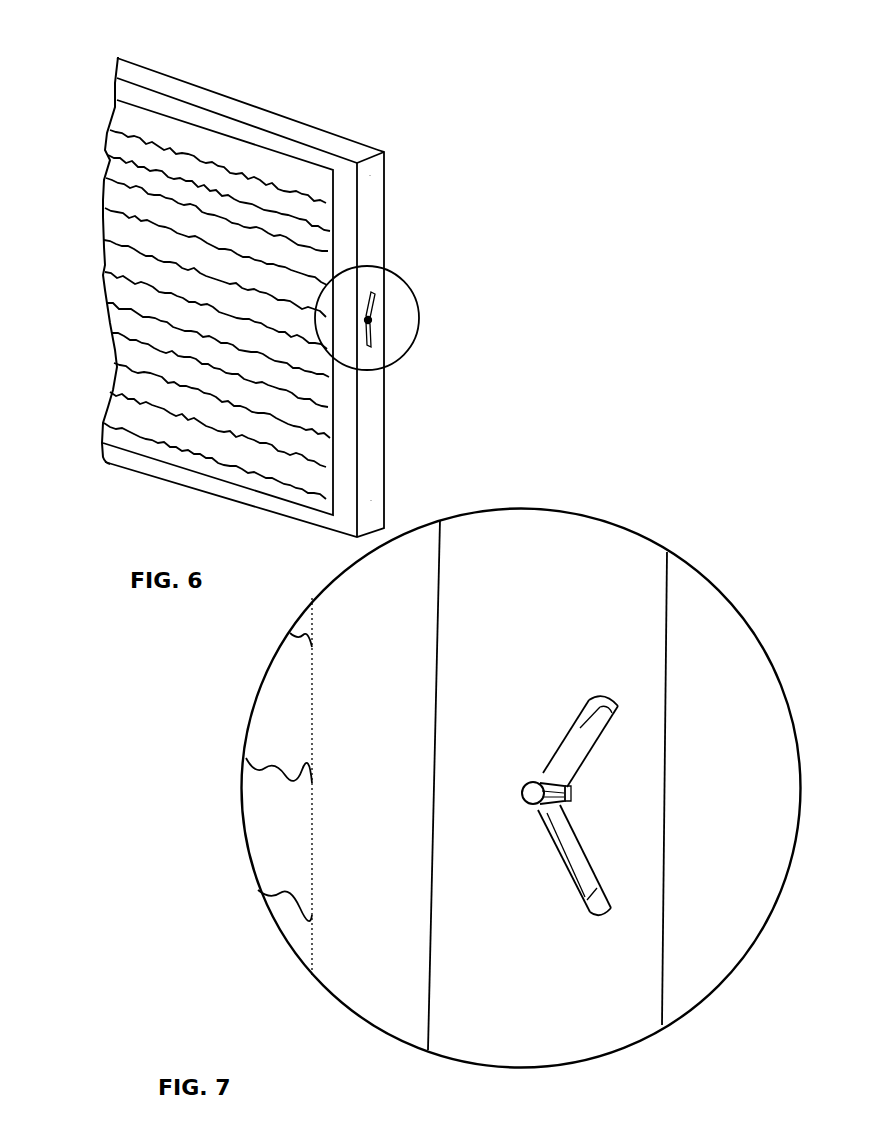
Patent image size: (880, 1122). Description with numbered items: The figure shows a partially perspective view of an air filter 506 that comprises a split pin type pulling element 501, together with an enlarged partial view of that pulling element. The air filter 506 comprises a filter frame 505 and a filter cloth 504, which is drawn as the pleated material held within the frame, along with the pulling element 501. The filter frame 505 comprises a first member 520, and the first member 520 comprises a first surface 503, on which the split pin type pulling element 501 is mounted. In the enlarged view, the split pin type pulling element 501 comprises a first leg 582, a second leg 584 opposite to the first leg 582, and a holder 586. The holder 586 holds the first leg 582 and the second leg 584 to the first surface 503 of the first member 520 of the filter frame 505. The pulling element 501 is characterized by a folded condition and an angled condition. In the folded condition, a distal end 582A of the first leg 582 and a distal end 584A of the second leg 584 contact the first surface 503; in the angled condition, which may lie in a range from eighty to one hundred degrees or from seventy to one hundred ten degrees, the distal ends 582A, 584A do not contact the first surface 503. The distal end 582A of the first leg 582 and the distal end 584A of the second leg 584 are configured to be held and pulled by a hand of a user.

In FIG. 6, the air filter 506 is at (228, 74).
In FIG. 6, the filter cloth 504 is at (260, 162).
In FIG. 6, the filter frame 505 is at (348, 140).
In FIG. 6, the first surface 503 is at (370, 203).
In FIG. 6, the split pin type pulling element 501 is at (378, 312).
In FIG. 7, the split pin type pulling element 501 is at (573, 847).
In FIG. 6, the first member 520 is at (373, 457).
In FIG. 7, the first leg 582 is at (587, 730).
In FIG. 7, the distal end of the first leg 582A is at (618, 692).
In FIG. 7, the second leg 584 is at (585, 915).
In FIG. 7, the distal end of the second leg 584A is at (611, 921).
In FIG. 7, the holder 586 is at (511, 790).